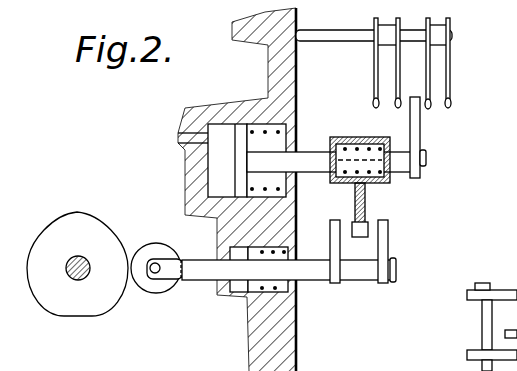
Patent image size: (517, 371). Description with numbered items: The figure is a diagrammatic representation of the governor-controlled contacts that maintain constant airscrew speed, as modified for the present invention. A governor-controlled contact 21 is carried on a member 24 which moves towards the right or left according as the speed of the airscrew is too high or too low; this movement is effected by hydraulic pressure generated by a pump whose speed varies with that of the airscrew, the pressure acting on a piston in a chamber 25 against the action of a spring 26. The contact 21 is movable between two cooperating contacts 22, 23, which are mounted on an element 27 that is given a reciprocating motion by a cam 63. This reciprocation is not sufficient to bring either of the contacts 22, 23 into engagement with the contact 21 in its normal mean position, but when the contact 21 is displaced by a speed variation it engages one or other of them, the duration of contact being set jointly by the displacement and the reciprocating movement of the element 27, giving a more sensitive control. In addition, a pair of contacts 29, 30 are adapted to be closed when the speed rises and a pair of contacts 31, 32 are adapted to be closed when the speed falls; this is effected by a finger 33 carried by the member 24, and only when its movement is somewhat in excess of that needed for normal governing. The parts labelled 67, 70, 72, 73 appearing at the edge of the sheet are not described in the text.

The governor-controlled contact 21 is at (367, 222).
The cooperating contact 22 is at (341, 226).
The cooperating contact 23 is at (389, 228).
The member 24 is at (312, 151).
The chamber 25 is at (235, 143).
The spring 26 is at (262, 124).
The element 27 is at (368, 270).
The contact 29 is at (429, 108).
The contact 30 is at (450, 99).
The contact 31 is at (396, 100).
The contact 32 is at (373, 102).
The finger 33 is at (421, 135).
The cam 63 is at (106, 296).
The flange 67 is at (482, 342).
The flange 70 is at (516, 314).
The member 72 is at (506, 255).
The stem 73 is at (516, 330).